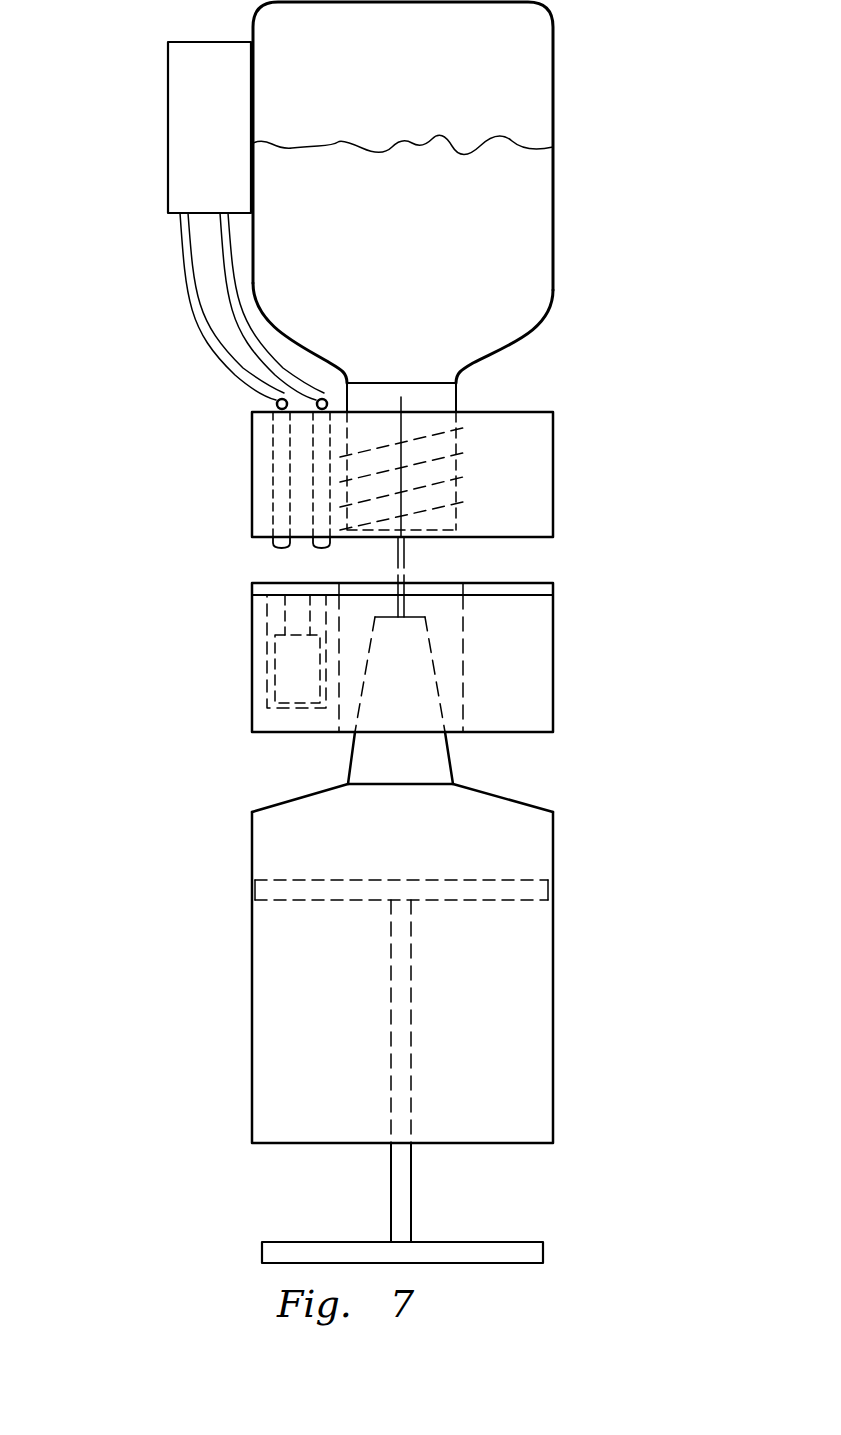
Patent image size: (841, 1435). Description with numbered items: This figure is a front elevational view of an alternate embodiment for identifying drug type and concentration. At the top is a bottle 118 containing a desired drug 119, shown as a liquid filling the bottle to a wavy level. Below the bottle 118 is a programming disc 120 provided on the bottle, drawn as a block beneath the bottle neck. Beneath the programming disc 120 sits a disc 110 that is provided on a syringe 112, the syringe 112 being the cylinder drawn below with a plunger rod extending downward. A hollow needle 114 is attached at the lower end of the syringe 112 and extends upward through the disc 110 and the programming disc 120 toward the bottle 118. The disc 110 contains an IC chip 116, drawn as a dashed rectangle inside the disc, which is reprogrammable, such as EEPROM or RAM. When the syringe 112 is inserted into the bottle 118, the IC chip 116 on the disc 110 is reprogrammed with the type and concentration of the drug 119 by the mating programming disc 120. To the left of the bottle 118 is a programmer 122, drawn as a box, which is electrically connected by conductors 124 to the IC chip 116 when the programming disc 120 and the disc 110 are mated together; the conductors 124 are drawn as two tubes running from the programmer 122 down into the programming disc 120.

The disc 110 is at (553, 632).
The syringe 112 is at (553, 990).
The hollow needle 114 is at (403, 558).
The IC chip 116 is at (293, 663).
The bottle 118 is at (553, 77).
The drug 119 is at (507, 183).
The programming disc 120 is at (553, 425).
The programmer 122 is at (190, 112).
The conductors 124 is at (278, 458).